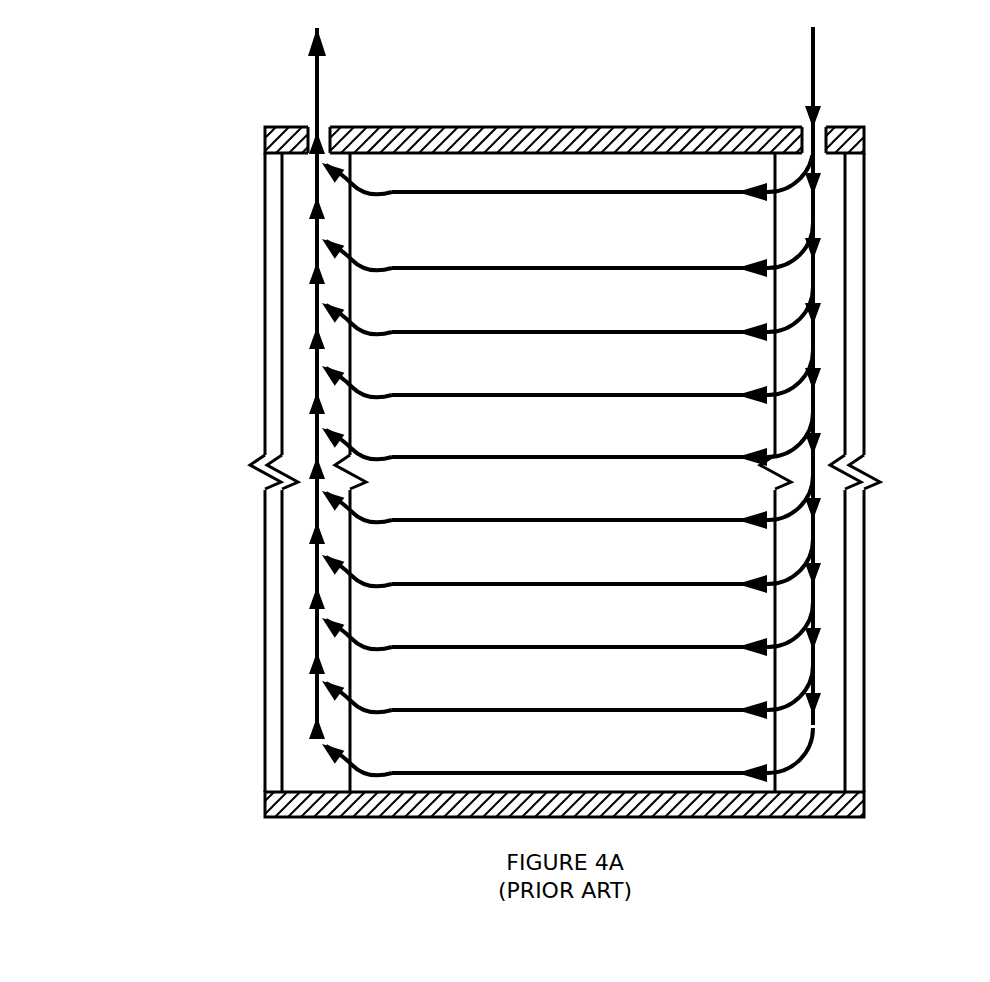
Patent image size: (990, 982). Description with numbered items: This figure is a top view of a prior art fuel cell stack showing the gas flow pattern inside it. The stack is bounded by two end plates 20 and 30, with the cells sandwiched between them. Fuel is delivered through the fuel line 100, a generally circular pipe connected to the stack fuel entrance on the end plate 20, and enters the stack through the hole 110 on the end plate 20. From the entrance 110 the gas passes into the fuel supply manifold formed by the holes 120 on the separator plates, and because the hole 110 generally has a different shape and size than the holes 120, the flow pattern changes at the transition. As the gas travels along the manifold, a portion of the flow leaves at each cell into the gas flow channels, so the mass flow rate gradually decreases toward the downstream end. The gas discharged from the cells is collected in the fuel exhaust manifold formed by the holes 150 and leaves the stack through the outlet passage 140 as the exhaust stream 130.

The end plate 20 is at (570, 125).
The end plate 30 is at (863, 783).
The fuel line 100 is at (818, 63).
The hole on the end plate 110 is at (818, 143).
The holes forming fuel supply manifold 120 is at (827, 338).
The outlet fluid flow 130 is at (308, 67).
The outlet port 140 is at (330, 127).
The holes forming fuel exhaust manifold 150 is at (297, 573).